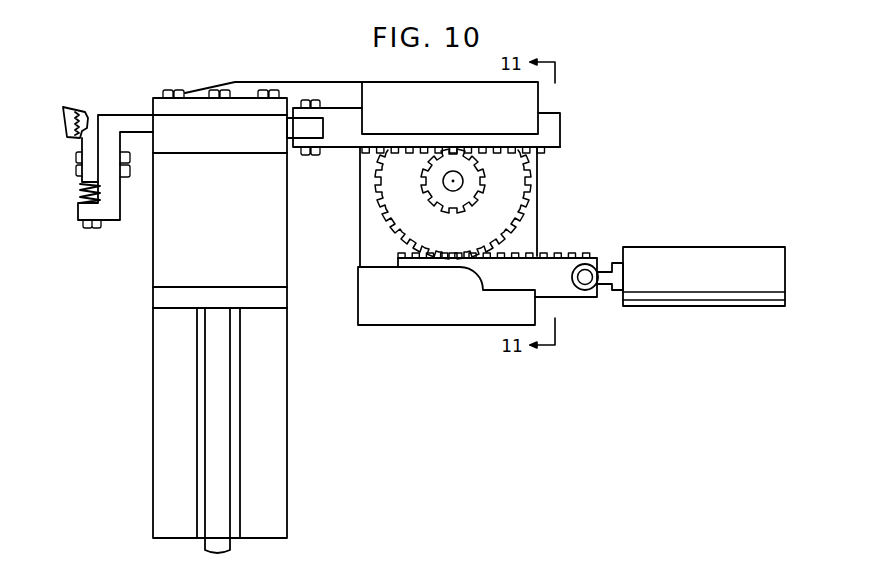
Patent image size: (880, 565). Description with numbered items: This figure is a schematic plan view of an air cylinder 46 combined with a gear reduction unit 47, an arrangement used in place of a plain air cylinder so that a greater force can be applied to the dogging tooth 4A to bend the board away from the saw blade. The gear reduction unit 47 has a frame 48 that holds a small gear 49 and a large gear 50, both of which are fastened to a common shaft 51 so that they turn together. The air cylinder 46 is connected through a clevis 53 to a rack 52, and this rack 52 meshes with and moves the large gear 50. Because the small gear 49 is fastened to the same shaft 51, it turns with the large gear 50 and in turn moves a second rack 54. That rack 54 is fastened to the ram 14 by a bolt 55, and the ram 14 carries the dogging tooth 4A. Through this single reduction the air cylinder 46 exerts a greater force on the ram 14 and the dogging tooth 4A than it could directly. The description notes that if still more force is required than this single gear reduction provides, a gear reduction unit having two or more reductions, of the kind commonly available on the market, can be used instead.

The dogging tooth 4A is at (68, 103).
The ram 14 is at (325, 128).
The air cylinder 46 is at (690, 243).
The gear reduction unit 47 is at (541, 94).
The frame 48 is at (545, 189).
The small gear 49 is at (481, 190).
The large gear 50 is at (398, 229).
The shaft 51 is at (449, 190).
The rack 52 is at (551, 252).
The clevis 53 is at (584, 292).
The rack 54 is at (563, 130).
The bolt 55 is at (326, 104).